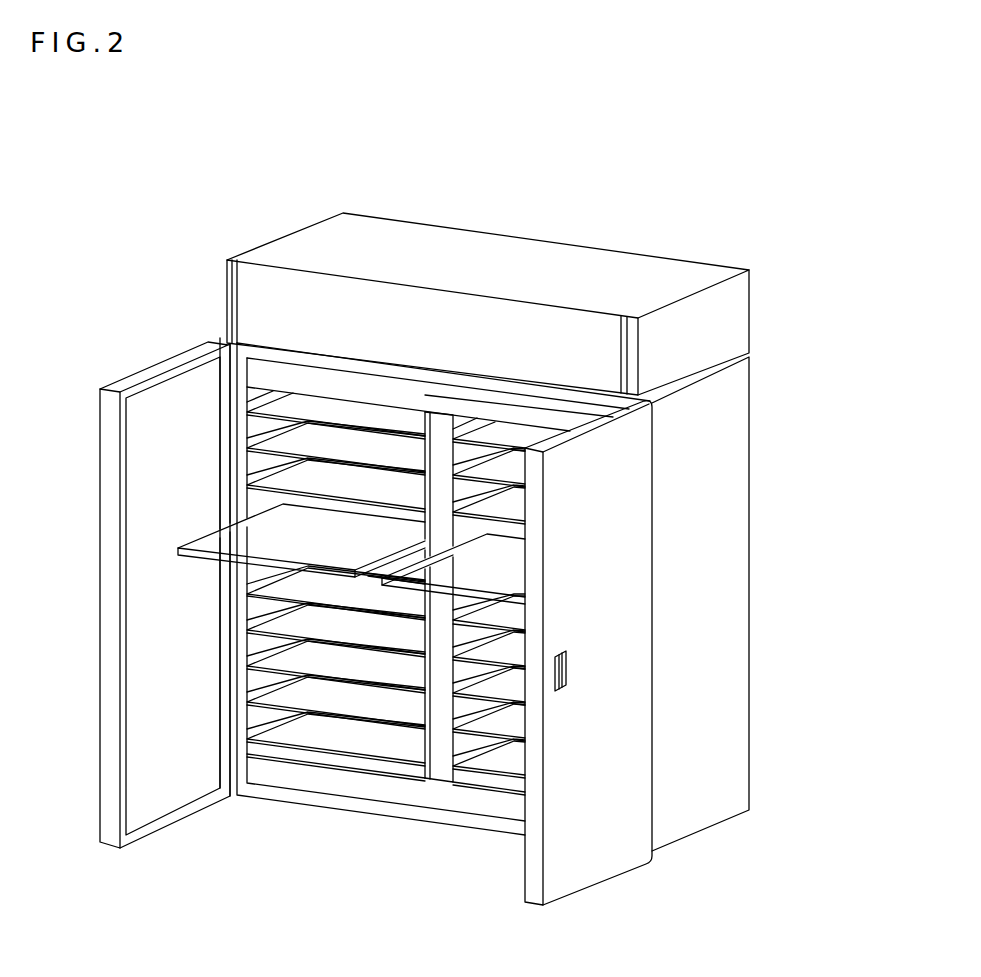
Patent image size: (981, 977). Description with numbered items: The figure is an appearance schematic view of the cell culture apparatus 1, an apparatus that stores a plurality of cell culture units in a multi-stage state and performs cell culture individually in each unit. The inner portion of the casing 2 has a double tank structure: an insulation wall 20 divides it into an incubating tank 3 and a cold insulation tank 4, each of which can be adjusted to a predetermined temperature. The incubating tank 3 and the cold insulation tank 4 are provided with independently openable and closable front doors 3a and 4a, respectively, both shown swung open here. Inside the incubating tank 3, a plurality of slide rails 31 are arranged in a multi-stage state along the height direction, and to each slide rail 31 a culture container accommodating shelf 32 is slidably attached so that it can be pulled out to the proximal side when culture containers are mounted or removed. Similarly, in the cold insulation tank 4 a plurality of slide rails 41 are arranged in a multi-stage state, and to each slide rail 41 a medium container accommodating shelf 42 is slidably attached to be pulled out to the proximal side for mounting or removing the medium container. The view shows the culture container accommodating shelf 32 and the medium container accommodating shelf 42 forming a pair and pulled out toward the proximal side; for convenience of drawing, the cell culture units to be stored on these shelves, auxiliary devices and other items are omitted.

The cell culture apparatus 1 is at (570, 166).
The casing 2 is at (705, 557).
The insulation wall 20 is at (440, 760).
The incubating tank 3 is at (614, 667).
The front door 3a is at (595, 853).
The slide rail 31 is at (488, 533).
The culture container accommodating shelf 32 is at (488, 570).
The cold insulation tank 4 is at (229, 643).
The front door 4a is at (160, 592).
The slide rail 41 is at (285, 502).
The medium container accommodating shelf 42 is at (263, 538).